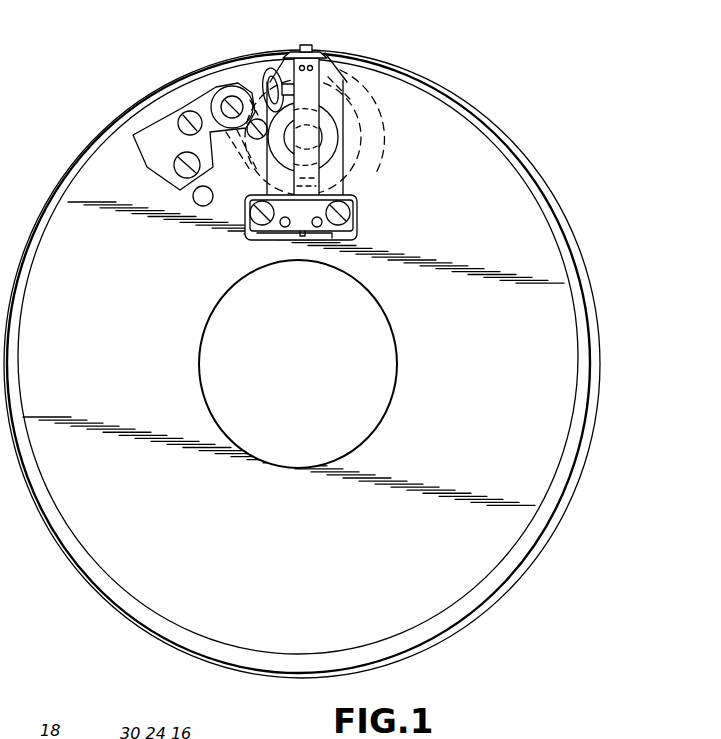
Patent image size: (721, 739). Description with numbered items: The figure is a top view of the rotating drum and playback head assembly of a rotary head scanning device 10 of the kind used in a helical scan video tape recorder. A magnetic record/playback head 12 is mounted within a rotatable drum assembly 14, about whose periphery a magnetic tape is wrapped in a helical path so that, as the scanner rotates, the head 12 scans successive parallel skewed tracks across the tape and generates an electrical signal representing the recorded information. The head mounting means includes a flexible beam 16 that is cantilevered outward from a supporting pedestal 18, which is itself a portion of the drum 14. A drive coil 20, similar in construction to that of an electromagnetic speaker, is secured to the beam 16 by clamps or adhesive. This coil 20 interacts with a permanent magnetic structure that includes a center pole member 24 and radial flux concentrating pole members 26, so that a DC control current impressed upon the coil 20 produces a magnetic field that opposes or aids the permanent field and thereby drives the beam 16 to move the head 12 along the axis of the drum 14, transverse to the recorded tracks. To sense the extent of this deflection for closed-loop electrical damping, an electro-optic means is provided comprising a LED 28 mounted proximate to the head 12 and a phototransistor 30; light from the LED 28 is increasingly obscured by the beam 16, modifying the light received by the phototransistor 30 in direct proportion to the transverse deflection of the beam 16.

The rotary head scanning device 10 is at (60, 168).
The magnetic record/playback head 12 is at (305, 44).
The rotatable drum assembly 14 is at (90, 137).
The flexible beam 16 is at (307, 185).
The supporting pedestal 18 is at (267, 236).
The drive coil 20 is at (279, 150).
The center pole member 24 is at (322, 137).
The radial flux concentrating pole members 26 is at (338, 170).
The LED 28 is at (324, 104).
The phototransistor 30 is at (288, 82).